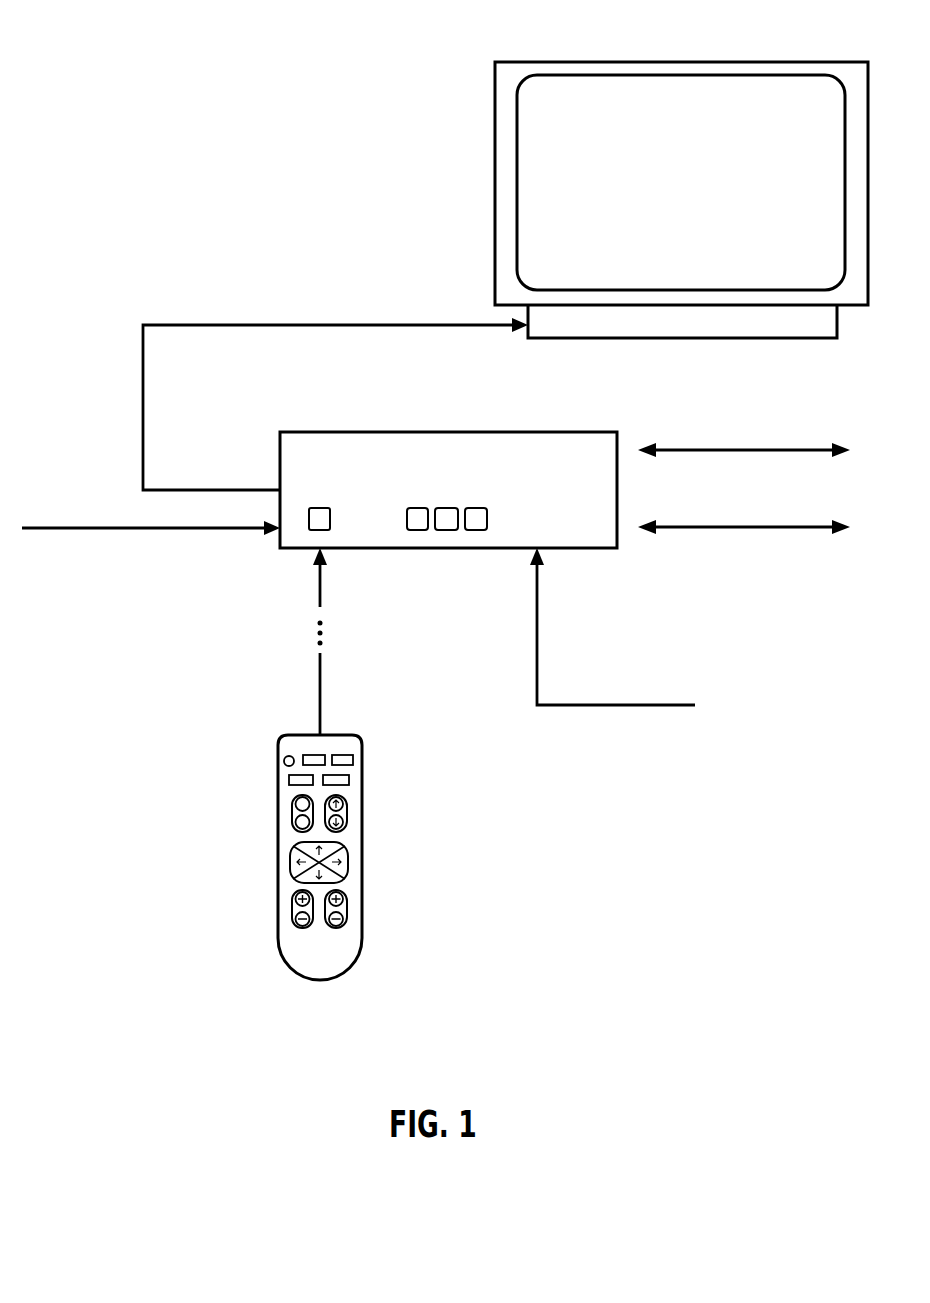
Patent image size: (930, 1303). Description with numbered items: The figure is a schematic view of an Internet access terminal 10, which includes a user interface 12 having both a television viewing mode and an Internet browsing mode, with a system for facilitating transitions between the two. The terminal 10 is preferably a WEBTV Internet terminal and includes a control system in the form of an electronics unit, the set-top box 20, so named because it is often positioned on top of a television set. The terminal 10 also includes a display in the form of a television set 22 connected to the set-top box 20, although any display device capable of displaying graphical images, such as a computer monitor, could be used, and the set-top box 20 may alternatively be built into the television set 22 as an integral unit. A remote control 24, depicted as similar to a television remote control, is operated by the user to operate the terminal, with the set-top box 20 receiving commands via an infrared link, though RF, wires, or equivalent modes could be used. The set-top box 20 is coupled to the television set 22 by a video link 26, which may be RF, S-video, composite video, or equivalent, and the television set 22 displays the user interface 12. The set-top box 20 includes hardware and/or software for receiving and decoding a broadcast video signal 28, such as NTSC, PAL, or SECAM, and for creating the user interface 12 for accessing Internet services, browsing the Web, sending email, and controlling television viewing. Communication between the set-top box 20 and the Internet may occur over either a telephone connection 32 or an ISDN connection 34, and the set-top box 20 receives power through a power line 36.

The Internet access terminal 10 is at (235, 245).
The user interface 12 is at (486, 112).
The set-top box 20 is at (591, 538).
The television set 22 is at (702, 100).
The remote control 24 is at (343, 957).
The video link 26 is at (143, 352).
The broadcast video signal 28 is at (235, 530).
The telephone connection 32 is at (796, 447).
The ISDN connection 34 is at (787, 528).
The power line 36 is at (667, 703).